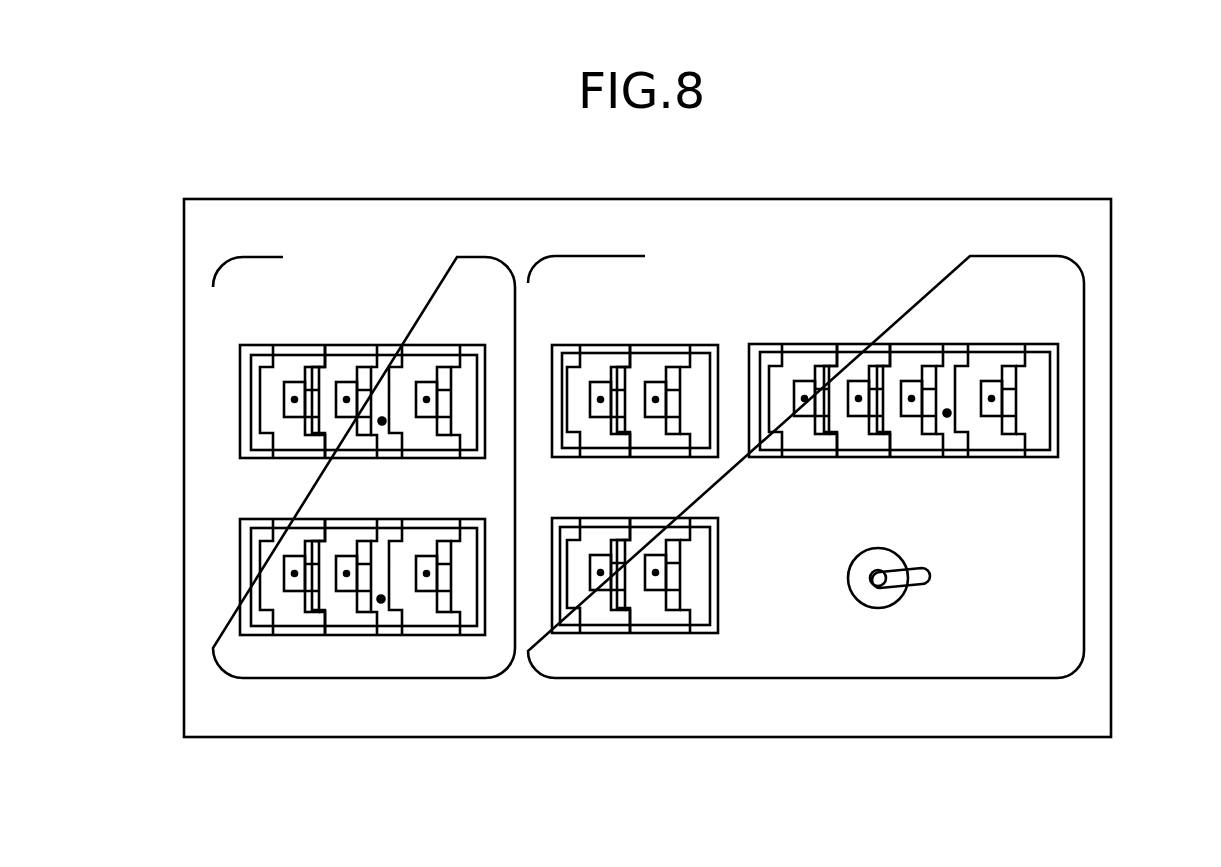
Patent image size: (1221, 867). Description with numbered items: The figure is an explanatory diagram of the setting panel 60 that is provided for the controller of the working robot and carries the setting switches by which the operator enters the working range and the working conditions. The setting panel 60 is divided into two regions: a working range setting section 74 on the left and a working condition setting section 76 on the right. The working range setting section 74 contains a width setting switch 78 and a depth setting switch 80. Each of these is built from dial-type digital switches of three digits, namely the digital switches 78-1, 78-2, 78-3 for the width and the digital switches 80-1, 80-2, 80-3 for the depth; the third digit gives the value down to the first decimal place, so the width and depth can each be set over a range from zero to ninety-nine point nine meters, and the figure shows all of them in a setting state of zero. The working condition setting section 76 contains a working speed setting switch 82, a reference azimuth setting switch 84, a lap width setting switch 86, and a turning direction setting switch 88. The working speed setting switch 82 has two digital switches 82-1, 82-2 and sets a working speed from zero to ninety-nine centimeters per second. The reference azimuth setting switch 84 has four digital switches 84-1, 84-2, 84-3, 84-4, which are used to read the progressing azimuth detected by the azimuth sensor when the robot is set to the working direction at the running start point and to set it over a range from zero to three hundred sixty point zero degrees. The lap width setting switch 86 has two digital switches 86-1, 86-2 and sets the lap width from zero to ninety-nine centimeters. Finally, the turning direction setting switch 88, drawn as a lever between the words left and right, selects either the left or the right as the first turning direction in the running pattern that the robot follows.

The setting panel 60 is at (256, 193).
The working range setting section 74 is at (209, 314).
The working condition setting section 76 is at (1087, 352).
The width setting switch 78 is at (277, 427).
The digital switch 78-1 is at (310, 372).
The digital switch 78-2 is at (365, 380).
The digital switch 78-3 is at (447, 356).
The depth setting switch 80 is at (260, 618).
The digital switch 80-1 is at (309, 600).
The digital switch 80-2 is at (357, 598).
The digital switch 80-3 is at (443, 598).
The working speed setting switch 82 is at (707, 457).
The digital switch 82-1 is at (612, 378).
The digital switch 82-2 is at (673, 378).
The reference azimuth setting switch 84 is at (1033, 425).
The digital switch 84-1 is at (817, 370).
The digital switch 84-2 is at (878, 380).
The digital switch 84-3 is at (937, 382).
The digital switch 84-4 is at (1008, 372).
The lap width setting switch 86 is at (647, 607).
The digital switch 86-1 is at (612, 598).
The digital switch 86-2 is at (673, 598).
The turning direction setting switch 88 is at (923, 588).